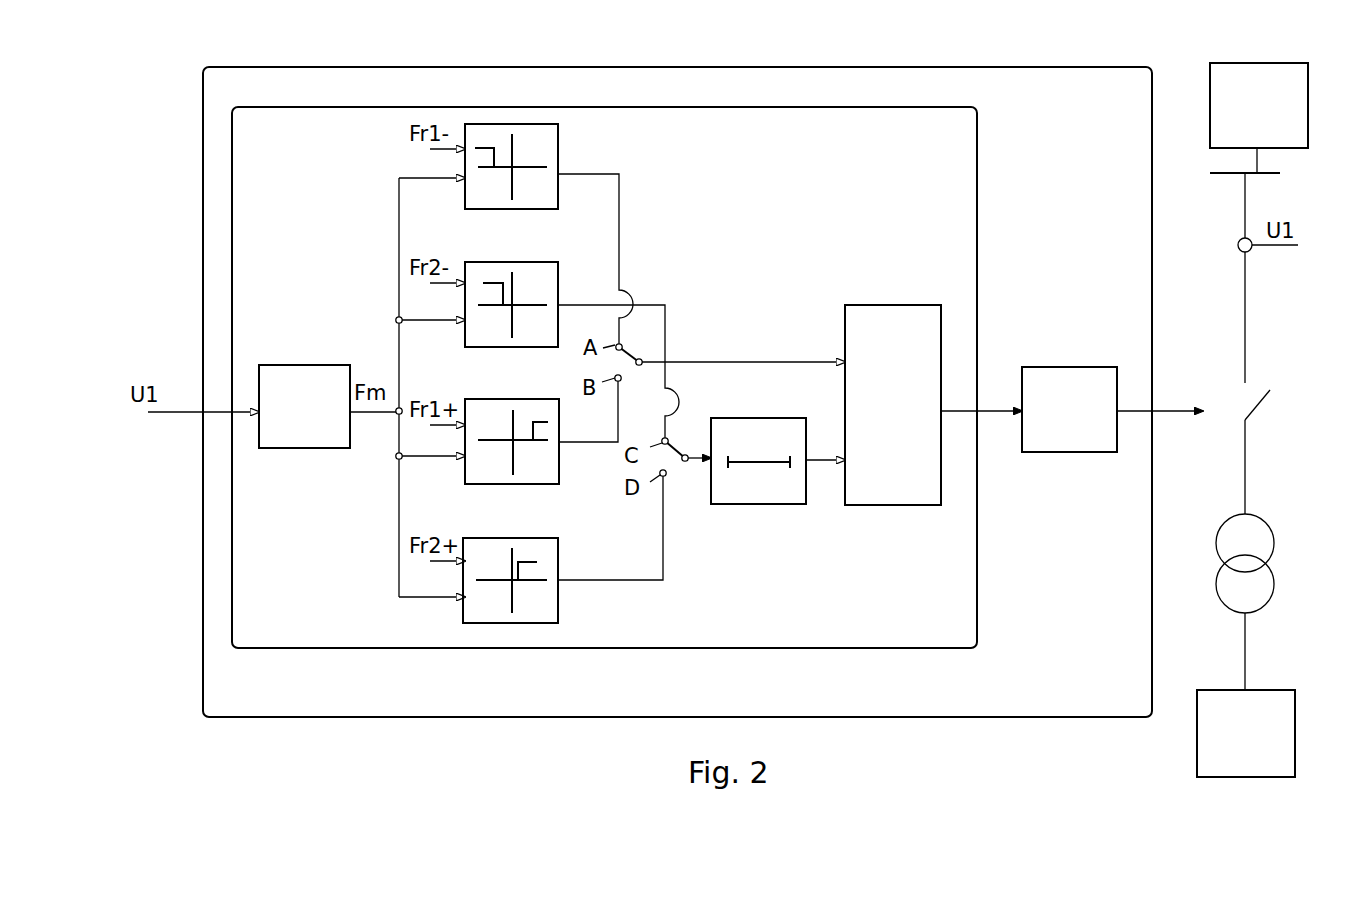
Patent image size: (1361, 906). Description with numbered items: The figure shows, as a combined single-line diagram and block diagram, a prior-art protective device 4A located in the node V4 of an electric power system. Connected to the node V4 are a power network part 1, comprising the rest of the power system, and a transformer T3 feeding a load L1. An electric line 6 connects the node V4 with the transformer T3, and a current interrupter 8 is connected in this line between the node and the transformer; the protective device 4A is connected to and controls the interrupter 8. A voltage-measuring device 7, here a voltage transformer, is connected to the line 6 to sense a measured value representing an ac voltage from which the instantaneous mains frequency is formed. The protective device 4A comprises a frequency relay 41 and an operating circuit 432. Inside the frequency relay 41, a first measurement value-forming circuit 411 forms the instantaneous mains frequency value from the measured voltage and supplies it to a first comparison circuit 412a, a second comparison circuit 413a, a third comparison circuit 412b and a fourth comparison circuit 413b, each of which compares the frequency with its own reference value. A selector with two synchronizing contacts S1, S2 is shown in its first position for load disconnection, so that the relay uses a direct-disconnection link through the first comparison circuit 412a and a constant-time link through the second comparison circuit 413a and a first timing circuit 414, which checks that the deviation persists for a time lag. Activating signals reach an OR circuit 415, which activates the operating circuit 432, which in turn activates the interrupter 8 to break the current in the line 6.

The power network part 1 is at (1250, 63).
The protective device 4A is at (278, 718).
The frequency relay 41 is at (420, 650).
The first measurement value-forming circuit 411 is at (300, 363).
The first comparison circuit 412a is at (560, 157).
The second comparison circuit 413a is at (518, 252).
The third comparison circuit 412b is at (528, 390).
The fourth comparison circuit 413b is at (528, 528).
The first timing circuit 414 is at (767, 505).
The OR circuit 415 is at (902, 283).
The operating circuit 432 is at (1083, 357).
The synchronizing contact S1 is at (628, 352).
The synchronizing contact S2 is at (677, 445).
The electric line 6 is at (1248, 290).
The voltage-measuring device 7 is at (1240, 239).
The current interrupter 8 is at (1262, 397).
The node V4 is at (1270, 175).
The transformer T3 is at (1258, 517).
The load L1 is at (1265, 690).